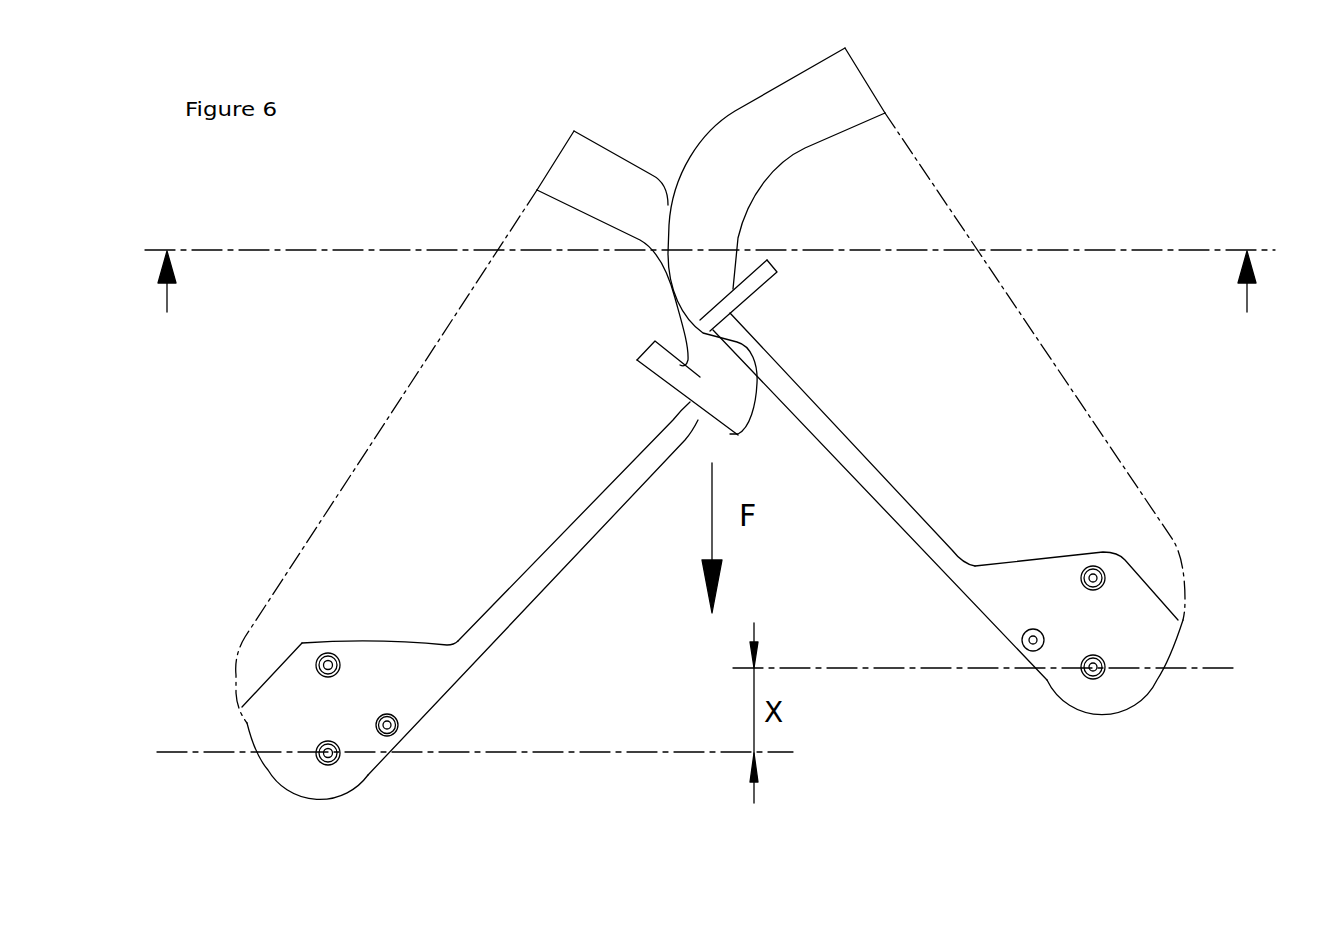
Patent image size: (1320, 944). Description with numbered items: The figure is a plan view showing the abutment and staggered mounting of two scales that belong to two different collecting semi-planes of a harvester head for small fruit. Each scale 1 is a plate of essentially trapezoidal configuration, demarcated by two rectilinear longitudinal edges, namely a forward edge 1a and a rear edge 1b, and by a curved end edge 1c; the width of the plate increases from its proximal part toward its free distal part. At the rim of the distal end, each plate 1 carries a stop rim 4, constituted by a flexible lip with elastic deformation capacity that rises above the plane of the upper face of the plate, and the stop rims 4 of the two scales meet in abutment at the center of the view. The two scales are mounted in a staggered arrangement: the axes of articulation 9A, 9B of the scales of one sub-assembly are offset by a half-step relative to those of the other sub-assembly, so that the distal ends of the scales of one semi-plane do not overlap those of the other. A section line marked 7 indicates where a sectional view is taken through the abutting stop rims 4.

The scale 1 is at (704, 456).
The forward edge 1a is at (518, 618).
The rear edge 1b is at (340, 487).
The curved end edge 1c is at (245, 722).
The stop rim 4 is at (587, 170).
The section line 7- 7 is at (710, 286).
The axis of articulation 9A is at (460, 754).
The axis of articulation 9B is at (998, 669).